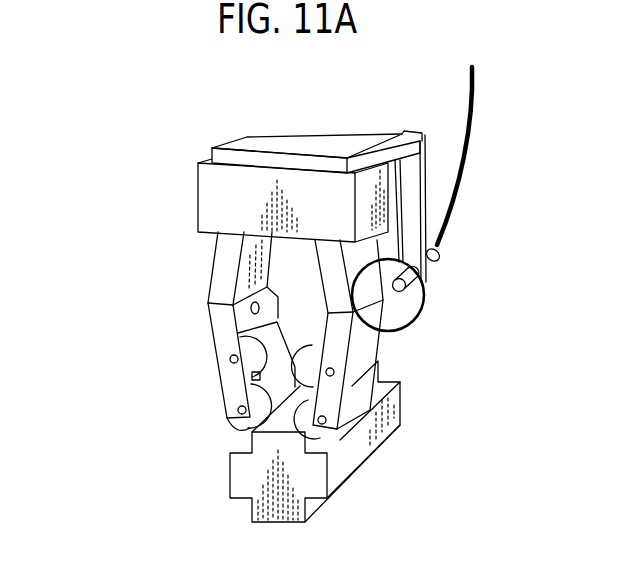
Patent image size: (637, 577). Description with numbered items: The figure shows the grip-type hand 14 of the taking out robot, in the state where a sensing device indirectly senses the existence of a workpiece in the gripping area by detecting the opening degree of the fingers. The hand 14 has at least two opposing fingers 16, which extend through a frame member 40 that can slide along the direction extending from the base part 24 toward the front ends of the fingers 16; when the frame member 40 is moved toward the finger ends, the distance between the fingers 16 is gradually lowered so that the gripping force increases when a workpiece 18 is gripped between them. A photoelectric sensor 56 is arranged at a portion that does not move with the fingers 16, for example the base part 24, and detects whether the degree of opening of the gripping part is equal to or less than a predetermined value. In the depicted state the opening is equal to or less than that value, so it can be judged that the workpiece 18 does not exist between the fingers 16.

The hand 14 is at (155, 256).
The fingers 16 is at (222, 330).
The workpiece 18 is at (240, 480).
The base part 24 is at (240, 150).
The frame member 40 is at (215, 198).
The photoelectric sensor 56 is at (434, 262).